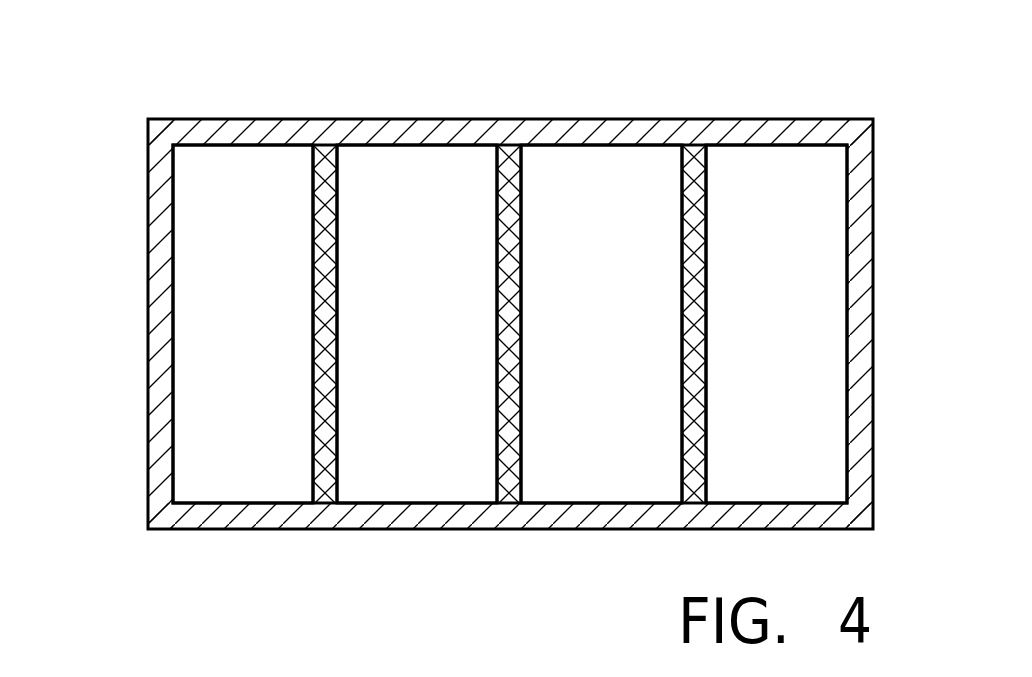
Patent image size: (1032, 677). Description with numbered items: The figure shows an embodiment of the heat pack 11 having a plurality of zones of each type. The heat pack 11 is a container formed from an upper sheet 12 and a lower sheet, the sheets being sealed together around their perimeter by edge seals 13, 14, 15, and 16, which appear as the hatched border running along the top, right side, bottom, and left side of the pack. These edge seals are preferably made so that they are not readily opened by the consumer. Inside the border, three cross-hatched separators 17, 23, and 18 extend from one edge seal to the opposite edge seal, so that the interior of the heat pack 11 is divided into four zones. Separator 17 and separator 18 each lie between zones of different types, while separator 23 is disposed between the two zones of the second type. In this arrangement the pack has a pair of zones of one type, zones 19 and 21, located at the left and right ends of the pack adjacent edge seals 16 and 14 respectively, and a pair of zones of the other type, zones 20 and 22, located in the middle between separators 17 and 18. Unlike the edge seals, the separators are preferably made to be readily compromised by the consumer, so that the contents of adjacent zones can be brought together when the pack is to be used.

The heat pack 11 is at (497, 326).
The upper sheet 12 is at (511, 326).
The edge seal 13 is at (218, 130).
The edge seal 14 is at (865, 182).
The edge seal 15 is at (348, 515).
The edge seal 16 is at (157, 425).
The separator 17 is at (313, 378).
The separator 18 is at (703, 397).
The zone 19 is at (200, 475).
The zone 20 is at (443, 465).
The zone 21 is at (833, 415).
The zone 22 is at (613, 475).
The separator 23 is at (520, 255).